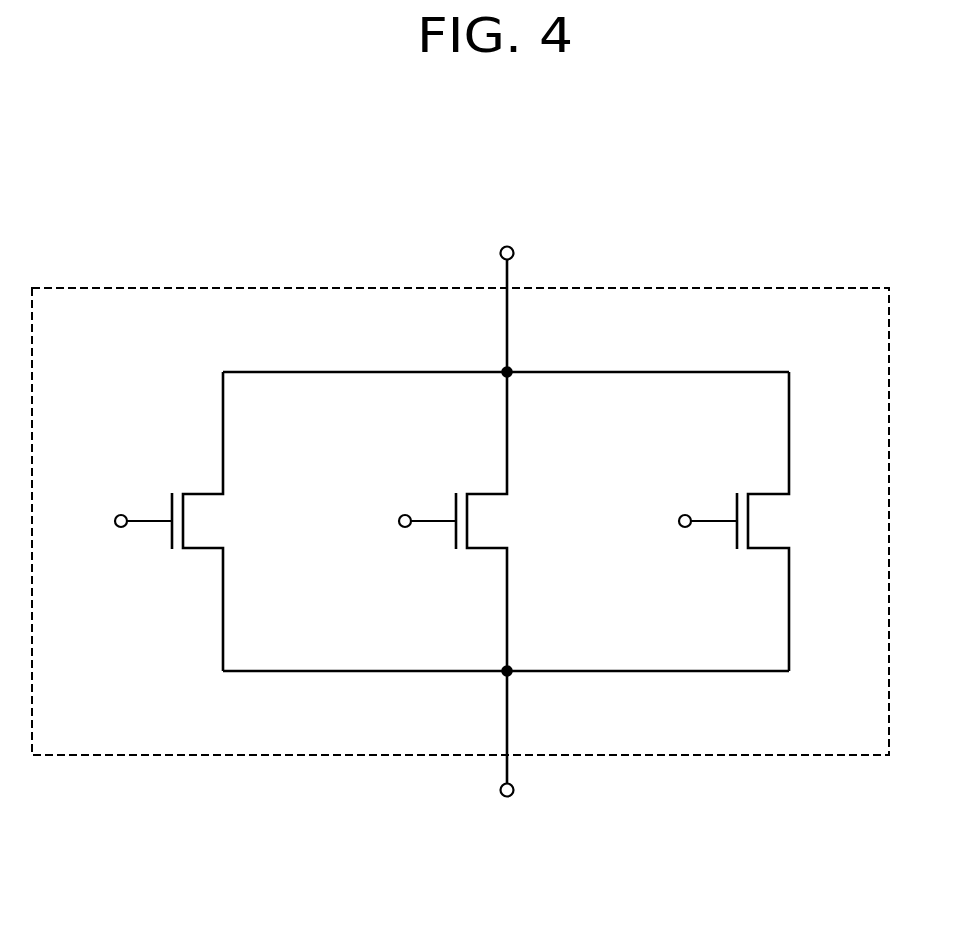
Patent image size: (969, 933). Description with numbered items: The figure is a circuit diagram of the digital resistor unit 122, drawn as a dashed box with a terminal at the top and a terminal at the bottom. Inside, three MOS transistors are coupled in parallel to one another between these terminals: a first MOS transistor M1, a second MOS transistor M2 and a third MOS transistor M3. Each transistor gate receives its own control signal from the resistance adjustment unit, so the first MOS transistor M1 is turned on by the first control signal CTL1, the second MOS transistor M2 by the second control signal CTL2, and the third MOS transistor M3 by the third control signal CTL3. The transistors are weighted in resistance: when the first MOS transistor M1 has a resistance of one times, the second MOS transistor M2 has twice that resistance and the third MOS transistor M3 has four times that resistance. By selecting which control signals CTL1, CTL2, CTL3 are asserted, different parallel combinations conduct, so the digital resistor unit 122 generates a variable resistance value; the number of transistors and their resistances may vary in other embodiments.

The digital resistor unit 122 is at (627, 288).
The first MOS transistor M1 is at (238, 521).
The second MOS transistor M2 is at (522, 521).
The third MOS transistor M3 is at (803, 521).
The first control signal CTL1 is at (113, 522).
The second control signal CTL2 is at (397, 522).
The third control signal CTL3 is at (678, 522).